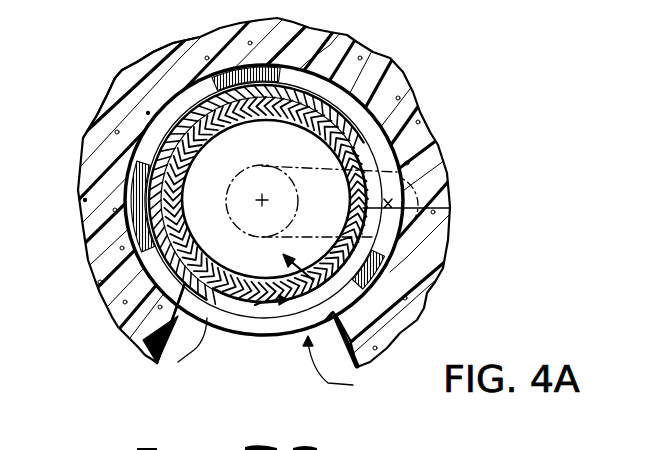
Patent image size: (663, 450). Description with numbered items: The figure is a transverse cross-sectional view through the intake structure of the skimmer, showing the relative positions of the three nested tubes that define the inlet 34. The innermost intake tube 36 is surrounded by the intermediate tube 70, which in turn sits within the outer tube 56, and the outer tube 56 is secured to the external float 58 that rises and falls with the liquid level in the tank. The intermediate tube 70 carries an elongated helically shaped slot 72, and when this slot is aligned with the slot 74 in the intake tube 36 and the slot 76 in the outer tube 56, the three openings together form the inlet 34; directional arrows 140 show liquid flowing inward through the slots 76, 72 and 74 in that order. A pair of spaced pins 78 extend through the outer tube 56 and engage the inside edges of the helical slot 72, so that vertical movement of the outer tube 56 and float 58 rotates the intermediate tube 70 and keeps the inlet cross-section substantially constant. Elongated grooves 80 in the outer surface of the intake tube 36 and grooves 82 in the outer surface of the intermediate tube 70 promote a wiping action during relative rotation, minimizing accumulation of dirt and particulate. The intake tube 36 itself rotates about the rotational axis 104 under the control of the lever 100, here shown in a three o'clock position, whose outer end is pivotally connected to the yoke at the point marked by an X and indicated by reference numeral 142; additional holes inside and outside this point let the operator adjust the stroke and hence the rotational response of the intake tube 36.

The inlet 34 is at (238, 356).
The intake tube 36 is at (248, 117).
The outer tube 56 is at (158, 122).
The external float 58 is at (82, 230).
The intermediate tube 70 is at (412, 124).
The helically shaped slot 72 is at (257, 320).
The slot 74 is at (289, 273).
The slot 76 is at (137, 338).
The spaced pins 78 is at (352, 338).
The elongated grooves 80 is at (214, 80).
The elongated grooves 82 is at (370, 56).
The lever 100 is at (397, 172).
The rotational axis 104 is at (244, 213).
The directional arrows 140 is at (285, 360).
The pivotal connection point 142 is at (450, 208).